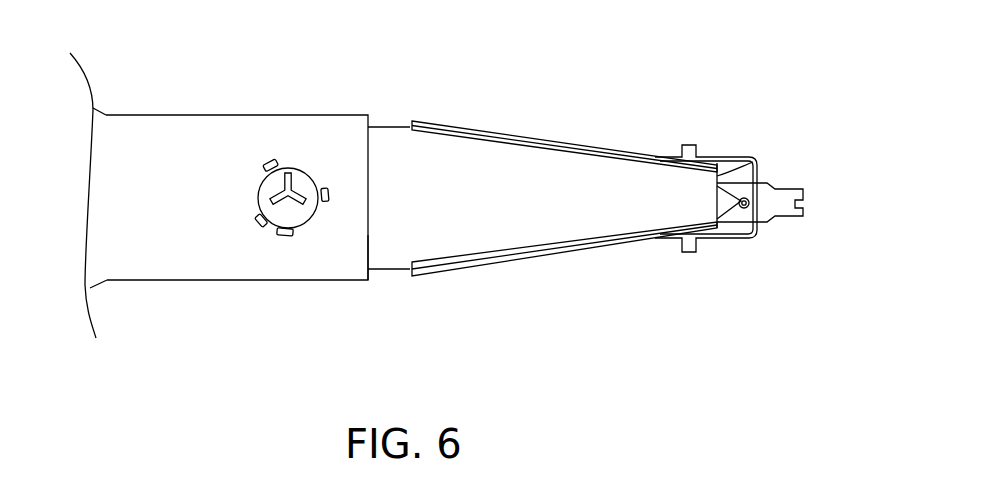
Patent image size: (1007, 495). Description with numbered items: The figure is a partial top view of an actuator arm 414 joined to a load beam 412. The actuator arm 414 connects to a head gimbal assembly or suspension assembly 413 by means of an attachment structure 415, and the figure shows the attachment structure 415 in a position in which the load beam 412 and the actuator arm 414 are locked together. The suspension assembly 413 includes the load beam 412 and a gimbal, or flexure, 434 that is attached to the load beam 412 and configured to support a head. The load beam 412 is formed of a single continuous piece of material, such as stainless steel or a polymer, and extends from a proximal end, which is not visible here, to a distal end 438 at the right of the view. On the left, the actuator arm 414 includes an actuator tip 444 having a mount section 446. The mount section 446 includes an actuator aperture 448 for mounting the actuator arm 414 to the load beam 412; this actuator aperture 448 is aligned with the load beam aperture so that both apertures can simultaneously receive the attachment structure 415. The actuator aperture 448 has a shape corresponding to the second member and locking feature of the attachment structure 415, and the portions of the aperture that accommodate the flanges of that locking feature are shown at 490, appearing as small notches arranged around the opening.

The load beam 412 is at (485, 152).
The suspension assembly 413 is at (635, 150).
The actuator arm 414 is at (283, 110).
The attachment structure 415 is at (240, 172).
The gimbal 434 is at (734, 155).
The distal end 438 is at (757, 162).
The actuator tip 444 is at (368, 240).
The mount section 446 is at (252, 255).
The actuator aperture 448 is at (307, 165).
The portions of apertures that accommodate flanges 490 is at (262, 160).